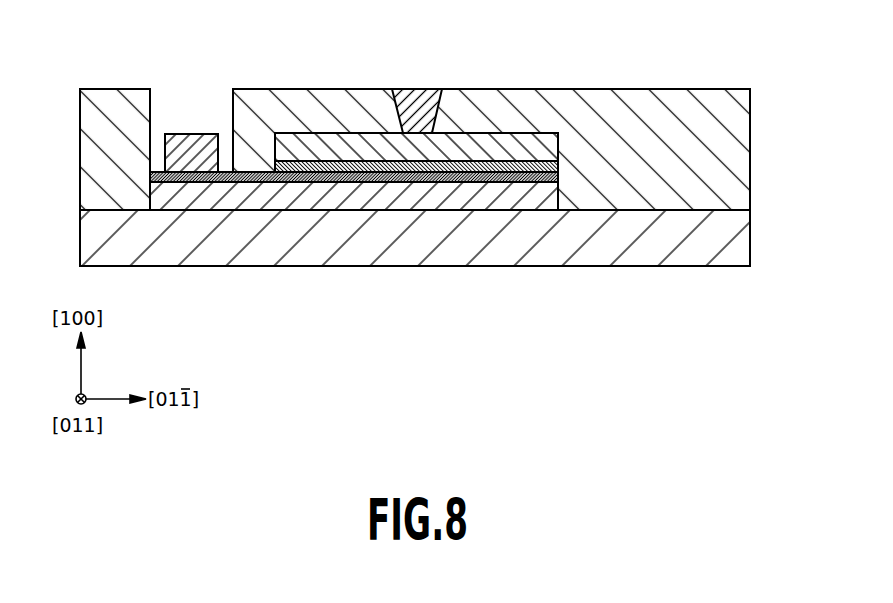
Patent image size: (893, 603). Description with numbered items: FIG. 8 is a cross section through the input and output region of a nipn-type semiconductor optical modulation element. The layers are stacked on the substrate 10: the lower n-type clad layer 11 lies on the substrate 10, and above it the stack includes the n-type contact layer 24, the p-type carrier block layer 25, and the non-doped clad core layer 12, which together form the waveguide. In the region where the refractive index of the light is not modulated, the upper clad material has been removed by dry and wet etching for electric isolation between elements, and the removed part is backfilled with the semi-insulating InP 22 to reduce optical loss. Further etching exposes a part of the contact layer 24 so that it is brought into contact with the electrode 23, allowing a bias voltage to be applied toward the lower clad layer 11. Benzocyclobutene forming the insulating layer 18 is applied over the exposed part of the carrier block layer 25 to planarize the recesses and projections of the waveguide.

The substrate 10 is at (724, 237).
The n-type clad layer 11 is at (532, 205).
The non-doped clad core layer 12 is at (343, 165).
The insulating layer 18 is at (113, 103).
The semi-insulating InP 22 is at (412, 102).
The electrode 23 is at (190, 143).
The n-type contact layer 24 is at (453, 178).
The p-type carrier block layer 25 is at (403, 170).